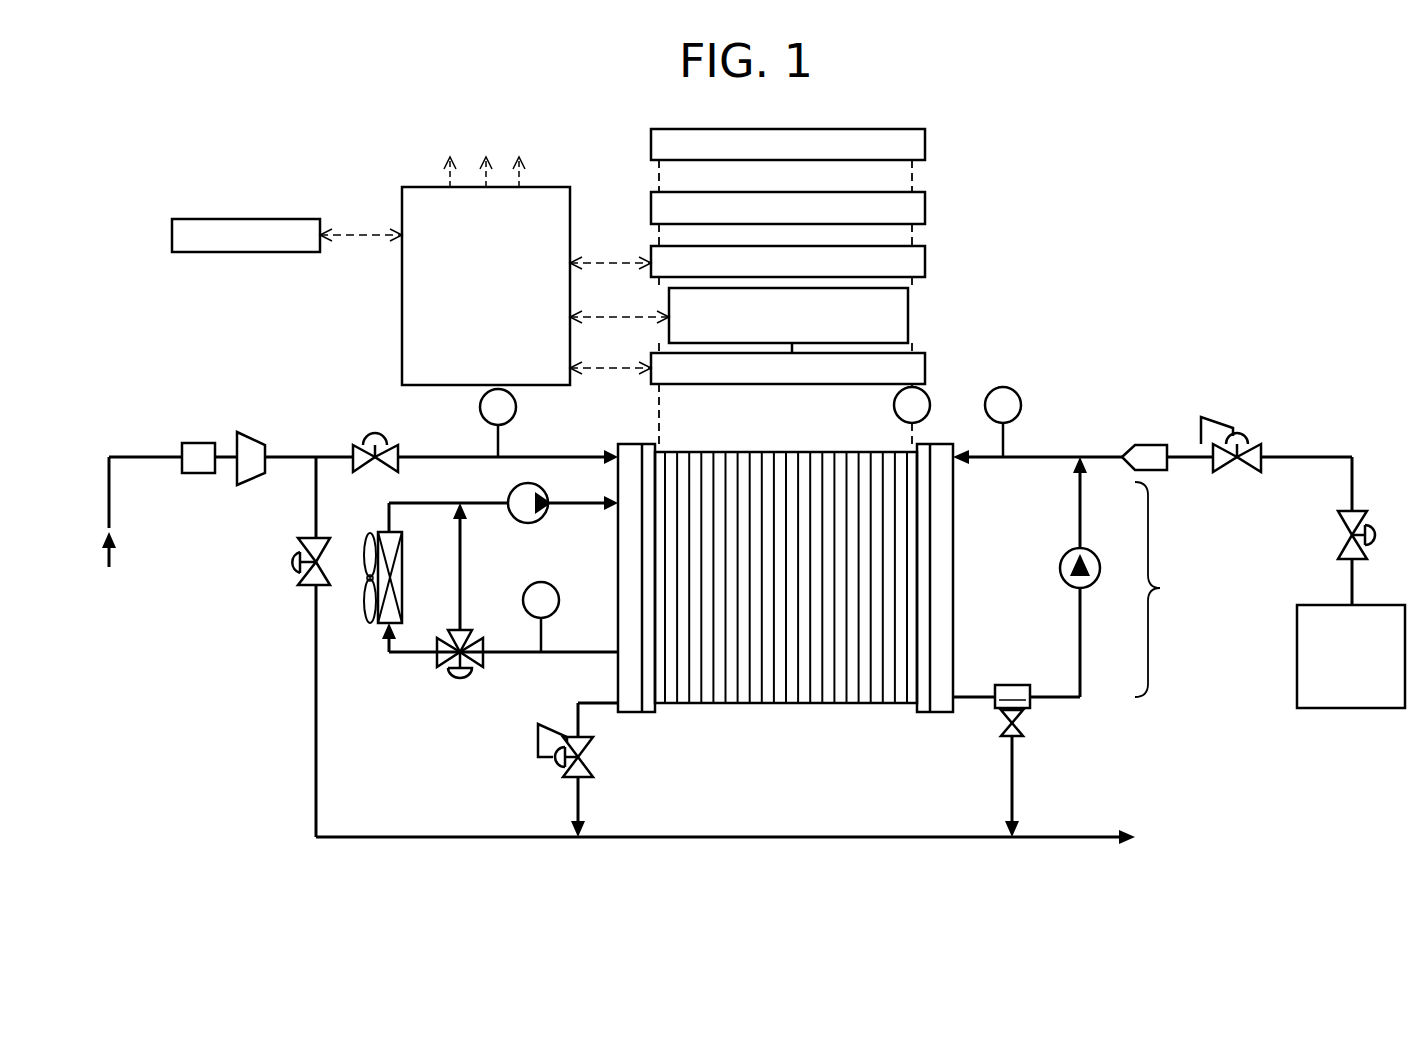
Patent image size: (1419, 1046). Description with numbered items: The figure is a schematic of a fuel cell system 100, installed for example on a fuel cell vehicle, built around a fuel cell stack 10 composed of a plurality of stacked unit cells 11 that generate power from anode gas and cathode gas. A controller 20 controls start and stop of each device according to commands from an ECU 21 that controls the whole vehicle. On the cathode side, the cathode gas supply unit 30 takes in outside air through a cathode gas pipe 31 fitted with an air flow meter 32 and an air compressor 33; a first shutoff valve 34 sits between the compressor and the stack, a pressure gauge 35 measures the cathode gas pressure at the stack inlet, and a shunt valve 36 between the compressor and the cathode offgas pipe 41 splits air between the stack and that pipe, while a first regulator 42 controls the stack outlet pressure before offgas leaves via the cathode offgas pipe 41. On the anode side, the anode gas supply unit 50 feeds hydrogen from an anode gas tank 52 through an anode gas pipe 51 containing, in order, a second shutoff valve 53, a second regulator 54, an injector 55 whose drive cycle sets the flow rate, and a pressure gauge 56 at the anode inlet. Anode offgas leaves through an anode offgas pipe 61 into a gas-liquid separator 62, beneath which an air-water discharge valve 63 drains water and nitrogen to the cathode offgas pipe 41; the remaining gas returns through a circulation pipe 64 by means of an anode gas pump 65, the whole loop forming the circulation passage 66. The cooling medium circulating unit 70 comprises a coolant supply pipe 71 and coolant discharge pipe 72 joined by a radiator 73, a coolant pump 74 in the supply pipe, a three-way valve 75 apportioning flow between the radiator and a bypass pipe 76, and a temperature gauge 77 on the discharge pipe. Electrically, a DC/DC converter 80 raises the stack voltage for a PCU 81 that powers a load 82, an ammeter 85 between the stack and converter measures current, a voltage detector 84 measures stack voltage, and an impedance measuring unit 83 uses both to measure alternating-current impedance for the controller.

The fuel cell system 100 is at (1253, 218).
The fuel cell stack 10 is at (785, 613).
The unit cells 11 is at (778, 704).
The controller 20 is at (402, 300).
The electronic control unit (ECU) 21 is at (172, 233).
The cathode gas supply unit 30 is at (258, 789).
The cathode gas pipe 31 is at (110, 495).
The air flow meter 32 is at (203, 443).
The air compressor 33 is at (252, 432).
The first shutoff valve 34 is at (382, 437).
The pressure gauge 35 is at (517, 406).
The shunt valve 36 is at (300, 577).
The cathode offgas pipe 41 is at (740, 839).
The first regulator 42 is at (553, 766).
The anode gas supply unit 50 is at (1288, 738).
The anode gas pipe 51 is at (1352, 486).
The anode gas tank 52 is at (1376, 605).
The second shutoff valve 53 is at (1340, 541).
The second regulator 54 is at (1262, 445).
The injector 55 is at (1147, 445).
The pressure gauge 56 is at (1022, 405).
The anode offgas pipe 61 is at (973, 700).
The gas-liquid separator 62 is at (1028, 709).
The air-water discharge valve 63 is at (1018, 736).
The circulation pipe 64 is at (1080, 645).
The anode gas pump 65 is at (1060, 566).
The circulation passage 66 is at (1169, 589).
The cooling medium circulating unit 70 is at (404, 700).
The coolant supply pipe 71 is at (568, 506).
The coolant discharge pipe 72 is at (567, 655).
The radiator 73 is at (377, 532).
The coolant pump 74 is at (544, 517).
The three-way valve 75 is at (460, 680).
The bypass pipe 76 is at (462, 568).
The temperature gauge 77 is at (559, 599).
The DC/DC converter 80 is at (925, 259).
The power control unit (PCU) 81 is at (925, 205).
The load 82 is at (925, 142).
The impedance measuring unit 83 is at (908, 313).
The voltage detector 84 is at (925, 366).
The ammeter 85 is at (894, 406).